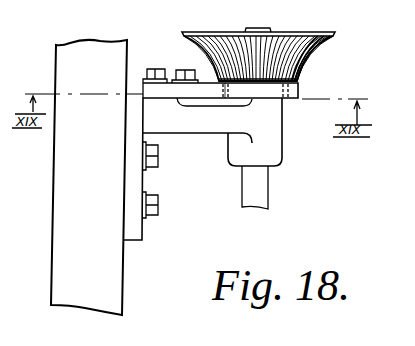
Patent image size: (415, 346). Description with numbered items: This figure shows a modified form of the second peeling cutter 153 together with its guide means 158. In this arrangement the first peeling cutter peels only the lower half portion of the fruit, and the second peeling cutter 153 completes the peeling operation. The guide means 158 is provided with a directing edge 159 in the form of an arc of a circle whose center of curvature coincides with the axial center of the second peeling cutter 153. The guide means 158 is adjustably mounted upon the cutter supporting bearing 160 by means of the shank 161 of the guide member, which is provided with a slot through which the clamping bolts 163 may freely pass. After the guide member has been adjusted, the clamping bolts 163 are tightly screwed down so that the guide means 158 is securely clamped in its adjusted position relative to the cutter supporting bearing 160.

The second peeling cutter 153 is at (313, 55).
The guide means 158 is at (194, 144).
The directing edge 159 is at (300, 91).
The cutter supporting bearing 160 is at (279, 155).
The shank 161 is at (165, 87).
The clamping bolts 163 is at (190, 68).